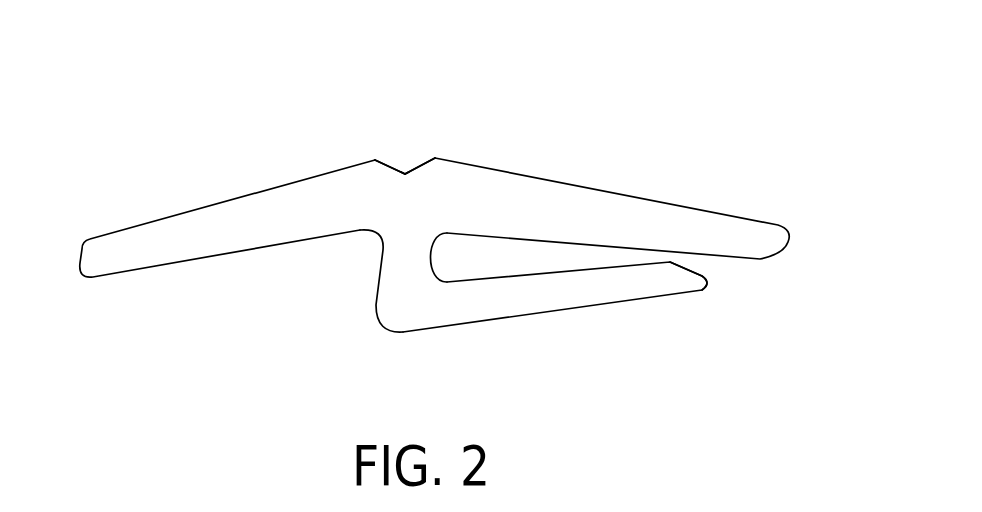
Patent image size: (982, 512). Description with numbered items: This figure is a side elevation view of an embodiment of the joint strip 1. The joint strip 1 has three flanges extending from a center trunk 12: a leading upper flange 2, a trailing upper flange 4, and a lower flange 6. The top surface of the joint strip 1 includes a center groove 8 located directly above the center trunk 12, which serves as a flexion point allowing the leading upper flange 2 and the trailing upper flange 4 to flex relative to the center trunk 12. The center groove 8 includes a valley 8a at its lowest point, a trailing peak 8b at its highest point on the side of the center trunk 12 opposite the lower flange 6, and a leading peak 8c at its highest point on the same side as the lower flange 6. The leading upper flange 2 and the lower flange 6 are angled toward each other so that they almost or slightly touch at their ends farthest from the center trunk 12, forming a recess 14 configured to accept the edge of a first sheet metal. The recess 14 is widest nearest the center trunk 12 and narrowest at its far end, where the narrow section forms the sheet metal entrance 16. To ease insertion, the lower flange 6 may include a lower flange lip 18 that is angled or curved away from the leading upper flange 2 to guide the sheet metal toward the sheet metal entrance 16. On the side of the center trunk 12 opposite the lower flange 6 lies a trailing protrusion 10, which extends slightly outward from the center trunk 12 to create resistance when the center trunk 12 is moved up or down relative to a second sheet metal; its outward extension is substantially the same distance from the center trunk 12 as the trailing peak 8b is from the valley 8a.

The joint strip 1 is at (628, 134).
The leading upper flange 2 is at (645, 212).
The trailing upper flange 4 is at (168, 237).
The lower flange 6 is at (527, 317).
The center groove 8 is at (396, 166).
The valley 8a is at (407, 170).
The trailing peak 8b is at (375, 160).
The leading peak 8c is at (436, 158).
The trailing protrusion 10 is at (380, 320).
The center trunk 12 is at (400, 263).
The recess 14 is at (496, 264).
The sheet metal entrance 16 is at (703, 264).
The lower flange lip 18 is at (710, 284).